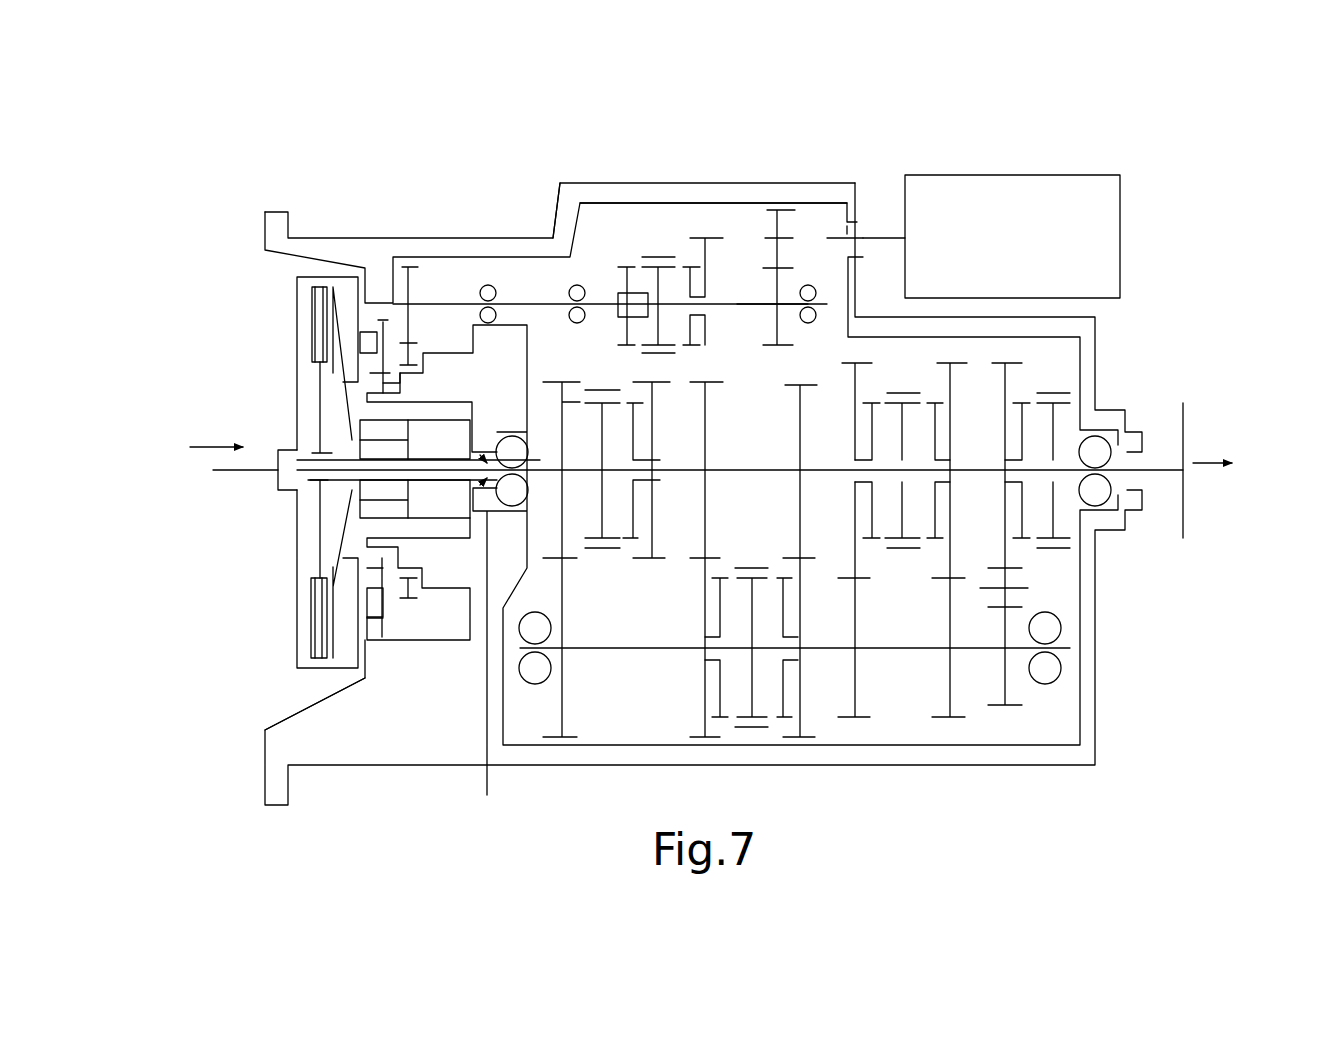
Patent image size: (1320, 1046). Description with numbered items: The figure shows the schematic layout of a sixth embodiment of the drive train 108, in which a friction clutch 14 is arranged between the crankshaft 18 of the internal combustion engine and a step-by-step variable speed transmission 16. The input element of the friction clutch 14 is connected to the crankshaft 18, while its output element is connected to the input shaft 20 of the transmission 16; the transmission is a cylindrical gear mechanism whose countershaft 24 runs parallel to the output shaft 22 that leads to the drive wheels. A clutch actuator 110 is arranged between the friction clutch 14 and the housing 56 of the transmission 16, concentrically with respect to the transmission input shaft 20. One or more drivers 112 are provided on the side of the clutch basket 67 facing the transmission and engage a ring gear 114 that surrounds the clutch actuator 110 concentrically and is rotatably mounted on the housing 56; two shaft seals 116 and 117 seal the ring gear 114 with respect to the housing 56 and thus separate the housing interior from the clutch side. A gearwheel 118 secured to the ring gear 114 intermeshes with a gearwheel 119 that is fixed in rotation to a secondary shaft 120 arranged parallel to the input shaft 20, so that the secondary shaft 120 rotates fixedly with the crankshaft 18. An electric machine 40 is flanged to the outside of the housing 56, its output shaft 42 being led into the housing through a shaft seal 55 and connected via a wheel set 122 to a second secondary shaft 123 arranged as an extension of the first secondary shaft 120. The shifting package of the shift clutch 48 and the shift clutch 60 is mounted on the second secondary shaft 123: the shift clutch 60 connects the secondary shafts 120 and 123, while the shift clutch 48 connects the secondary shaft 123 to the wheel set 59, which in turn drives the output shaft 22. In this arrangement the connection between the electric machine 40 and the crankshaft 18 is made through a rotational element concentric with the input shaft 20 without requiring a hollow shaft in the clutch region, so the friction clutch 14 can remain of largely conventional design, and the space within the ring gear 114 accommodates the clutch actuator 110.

The drive train 108 is at (222, 200).
The friction clutch 14 is at (287, 630).
The step-by-step variable speed transmission 16 is at (1113, 617).
The crankshaft 18 is at (238, 472).
The input shaft 20 is at (348, 472).
The output shaft 22 is at (1152, 468).
The countershaft 24 is at (898, 648).
The electric machine 40 is at (1122, 223).
The output shaft 42 is at (850, 247).
The shift clutch 48 is at (682, 252).
The shaft seal 55 is at (852, 233).
The housing 56 is at (568, 222).
The wheel set 59 is at (713, 222).
The shift clutch 60 is at (635, 248).
The clutch basket 67 is at (310, 673).
The clutch actuator 110 is at (447, 498).
The drivers 112 is at (372, 343).
The ring gear 114 is at (383, 378).
The shaft seal 116 is at (381, 316).
The shaft seal 117 is at (380, 555).
The gearwheel 118 is at (413, 352).
The gearwheel 119 is at (413, 287).
The secondary shaft 120 is at (533, 297).
The wheel set 122 is at (787, 202).
The second secondary shaft 123 is at (737, 297).